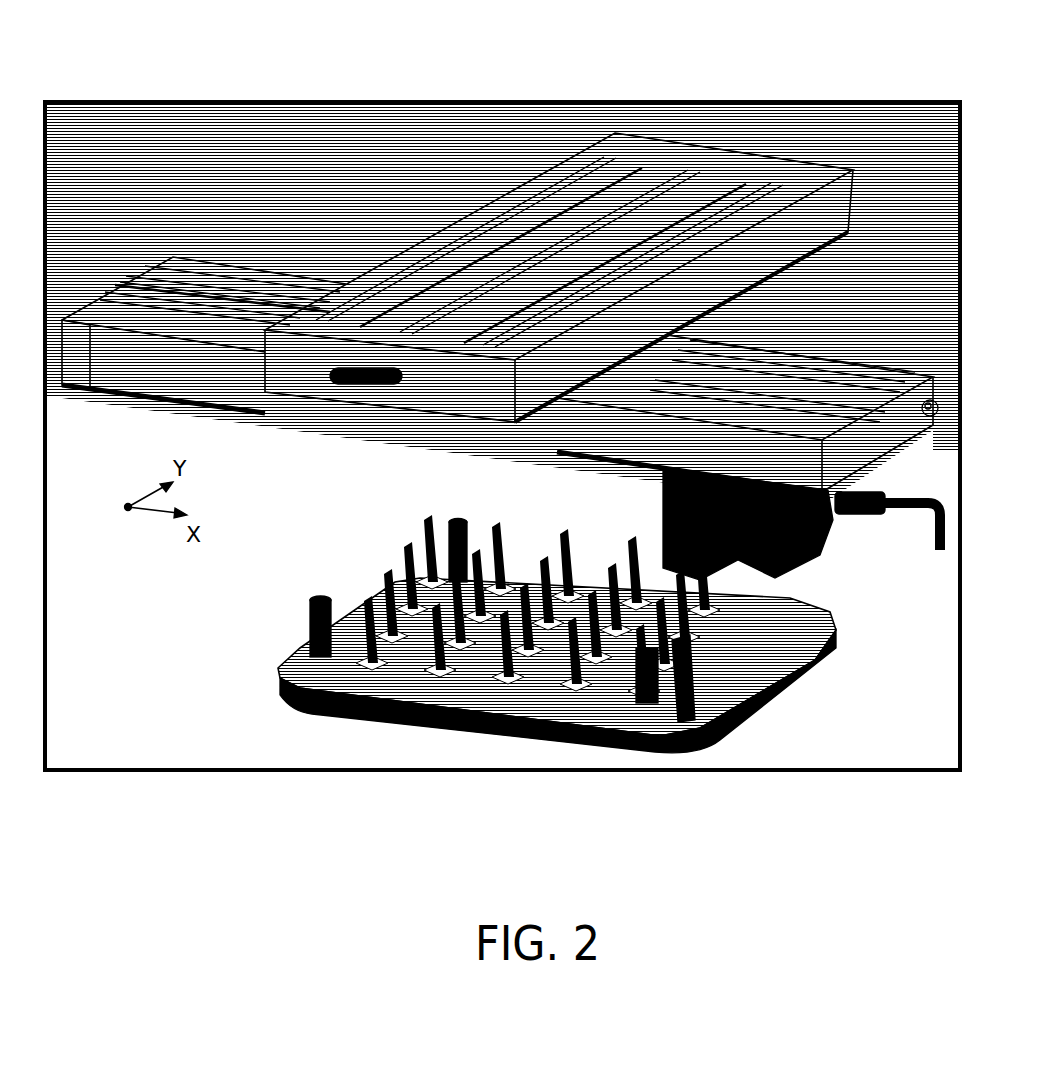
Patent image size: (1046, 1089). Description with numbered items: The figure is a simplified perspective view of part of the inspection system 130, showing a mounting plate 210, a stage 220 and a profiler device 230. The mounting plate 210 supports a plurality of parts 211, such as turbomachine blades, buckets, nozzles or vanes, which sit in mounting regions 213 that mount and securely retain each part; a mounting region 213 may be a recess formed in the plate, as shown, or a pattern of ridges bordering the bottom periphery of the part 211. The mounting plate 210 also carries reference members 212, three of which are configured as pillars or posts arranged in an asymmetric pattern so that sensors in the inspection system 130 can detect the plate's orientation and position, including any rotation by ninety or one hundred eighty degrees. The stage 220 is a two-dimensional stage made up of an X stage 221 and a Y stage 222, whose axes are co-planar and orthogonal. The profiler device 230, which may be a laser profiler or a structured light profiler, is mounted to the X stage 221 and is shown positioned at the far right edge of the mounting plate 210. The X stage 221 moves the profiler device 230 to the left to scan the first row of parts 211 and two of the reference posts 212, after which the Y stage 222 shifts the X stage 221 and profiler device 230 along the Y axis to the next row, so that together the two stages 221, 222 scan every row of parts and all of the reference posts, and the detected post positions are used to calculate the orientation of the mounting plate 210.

The inspection system 130 is at (504, 100).
The mounting plate 210 is at (793, 652).
The parts 211 is at (450, 657).
The reference members 212 is at (312, 630).
The mounting regions 213 is at (358, 665).
The stage 220 is at (362, 200).
The X stage 221 is at (138, 290).
The Y stage 222 is at (808, 250).
The profiler device 230 is at (813, 532).